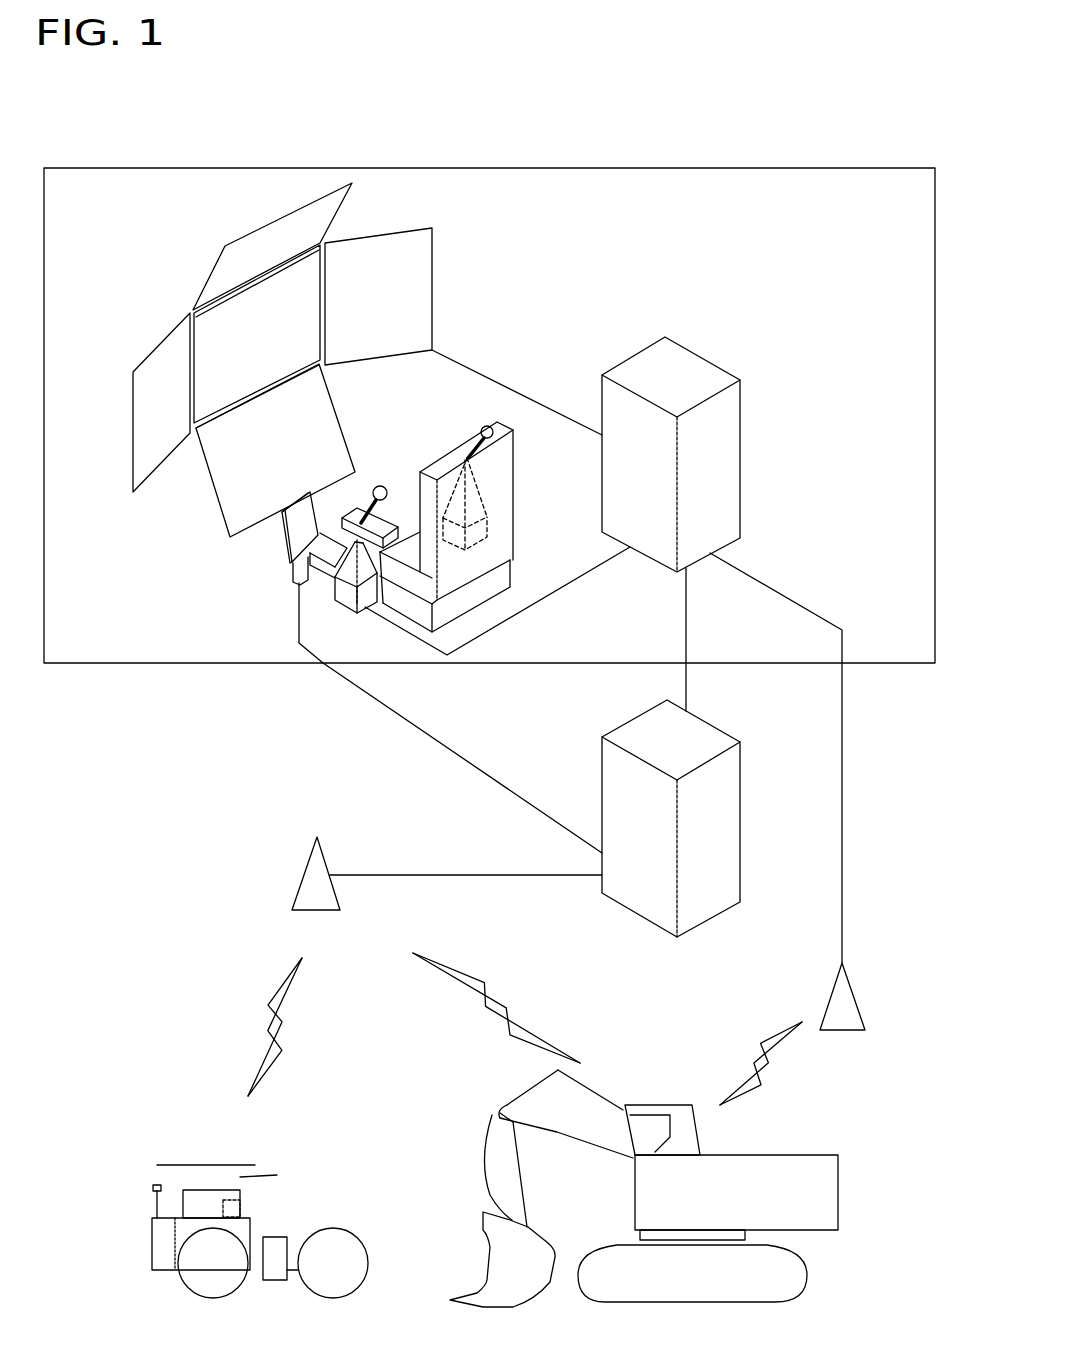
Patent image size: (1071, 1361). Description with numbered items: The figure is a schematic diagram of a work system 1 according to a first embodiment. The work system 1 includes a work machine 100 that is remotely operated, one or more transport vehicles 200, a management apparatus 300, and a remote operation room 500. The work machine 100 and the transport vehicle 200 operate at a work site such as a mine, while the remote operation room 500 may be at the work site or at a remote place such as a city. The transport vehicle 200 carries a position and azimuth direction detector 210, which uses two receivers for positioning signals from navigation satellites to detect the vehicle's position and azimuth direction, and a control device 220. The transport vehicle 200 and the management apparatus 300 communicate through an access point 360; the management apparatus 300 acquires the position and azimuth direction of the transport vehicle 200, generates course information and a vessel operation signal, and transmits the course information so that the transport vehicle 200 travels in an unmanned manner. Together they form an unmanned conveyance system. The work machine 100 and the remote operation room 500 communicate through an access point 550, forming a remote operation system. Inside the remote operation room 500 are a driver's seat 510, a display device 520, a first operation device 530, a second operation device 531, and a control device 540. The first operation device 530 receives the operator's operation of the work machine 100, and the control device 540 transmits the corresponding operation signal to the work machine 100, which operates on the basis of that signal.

The work system 1 is at (835, 138).
The work machine 100 is at (796, 1154).
The transport vehicle 200 is at (350, 1182).
The position and azimuth direction detector 210 is at (155, 1186).
The control device 220 is at (230, 1198).
The management apparatus 300 is at (741, 792).
The access point 360 is at (326, 855).
The remote operation room 500 is at (490, 168).
The driver's seat 510 is at (515, 500).
The display device 520 is at (172, 283).
The first operation device 530 is at (380, 486).
The second operation device 531 is at (288, 552).
The control device 540 is at (741, 432).
The access point 550 is at (856, 990).